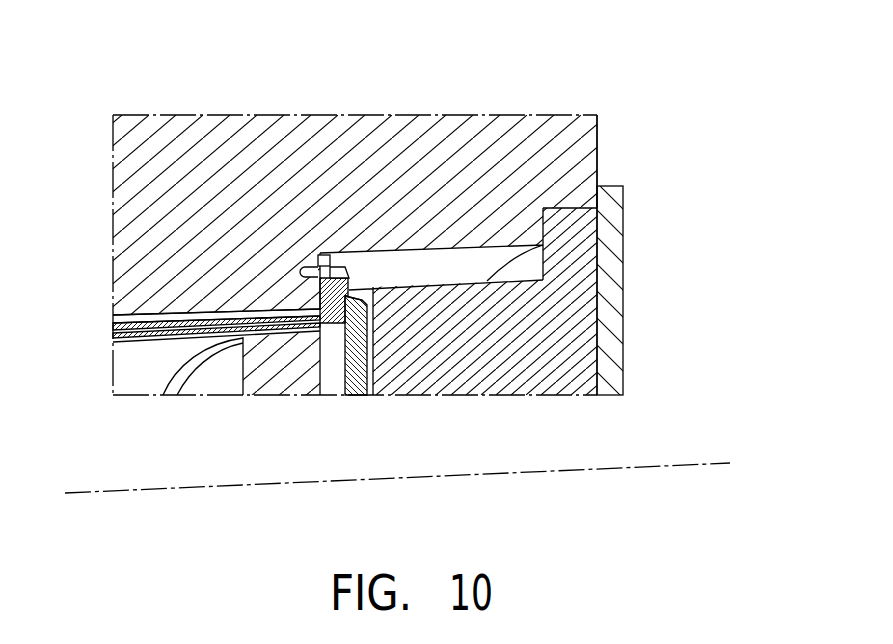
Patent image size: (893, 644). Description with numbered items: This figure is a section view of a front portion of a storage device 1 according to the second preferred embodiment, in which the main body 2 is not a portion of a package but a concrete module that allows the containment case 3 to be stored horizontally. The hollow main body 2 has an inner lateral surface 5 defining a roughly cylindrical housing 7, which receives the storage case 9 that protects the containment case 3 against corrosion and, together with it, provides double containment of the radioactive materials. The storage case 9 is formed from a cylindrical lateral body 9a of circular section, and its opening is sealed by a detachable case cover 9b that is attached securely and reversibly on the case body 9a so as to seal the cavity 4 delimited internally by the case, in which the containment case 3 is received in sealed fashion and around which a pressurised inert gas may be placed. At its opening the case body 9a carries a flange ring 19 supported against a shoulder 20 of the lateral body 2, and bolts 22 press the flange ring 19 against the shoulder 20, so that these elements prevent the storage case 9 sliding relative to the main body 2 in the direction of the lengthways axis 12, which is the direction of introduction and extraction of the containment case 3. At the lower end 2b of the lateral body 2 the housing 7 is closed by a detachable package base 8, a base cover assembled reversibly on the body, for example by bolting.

The storage device 1 is at (668, 228).
The main body 2 is at (164, 152).
The lower end 2b is at (573, 143).
The containment case 3 is at (228, 380).
The cavity 4 is at (330, 363).
The inner lateral surface 5 is at (278, 313).
The housing 7 is at (233, 315).
The package base 8 is at (582, 314).
The storage case 9 is at (357, 273).
The lateral body 9a is at (150, 324).
The case cover 9b is at (355, 365).
The lengthways axis 12 is at (705, 462).
The flange ring 19 is at (325, 254).
The shoulder 20 is at (350, 292).
The bolts 22 is at (336, 266).